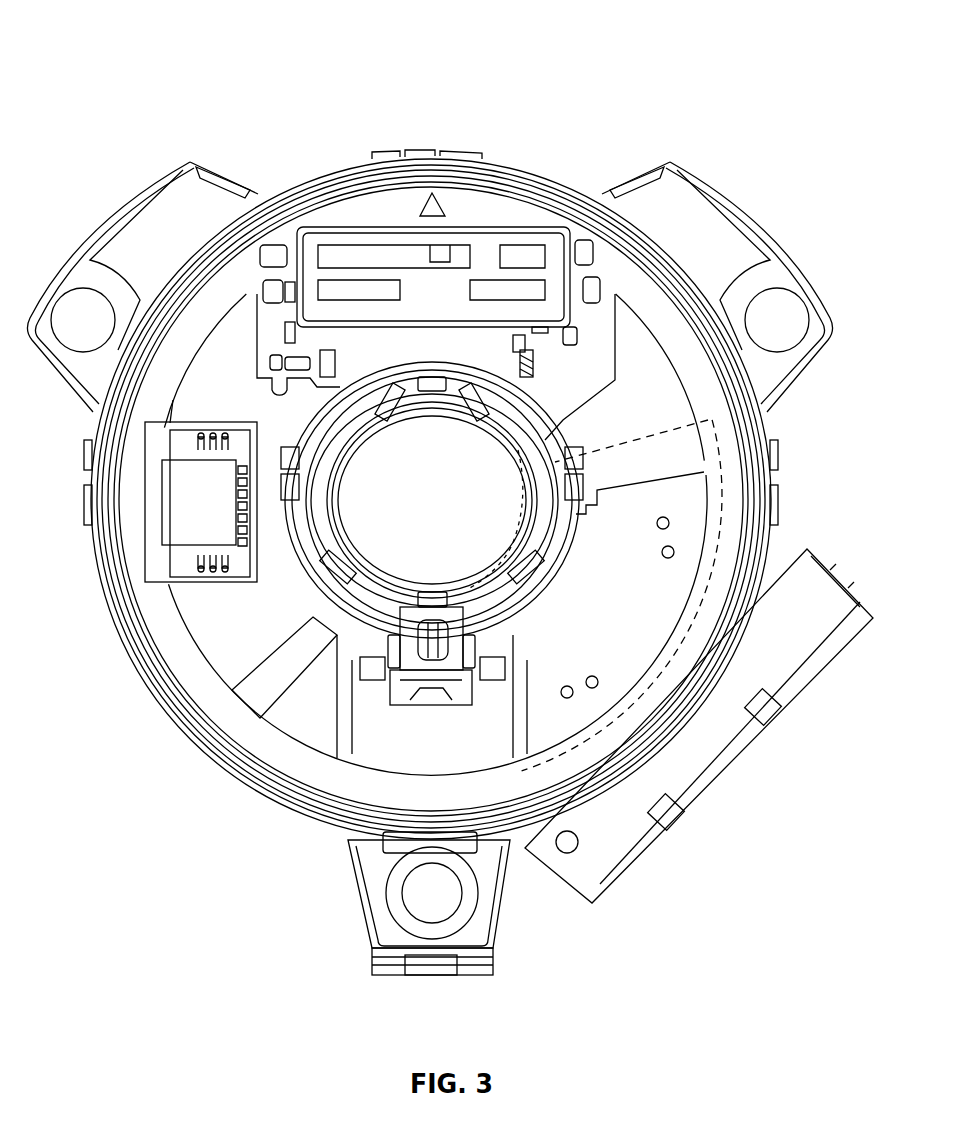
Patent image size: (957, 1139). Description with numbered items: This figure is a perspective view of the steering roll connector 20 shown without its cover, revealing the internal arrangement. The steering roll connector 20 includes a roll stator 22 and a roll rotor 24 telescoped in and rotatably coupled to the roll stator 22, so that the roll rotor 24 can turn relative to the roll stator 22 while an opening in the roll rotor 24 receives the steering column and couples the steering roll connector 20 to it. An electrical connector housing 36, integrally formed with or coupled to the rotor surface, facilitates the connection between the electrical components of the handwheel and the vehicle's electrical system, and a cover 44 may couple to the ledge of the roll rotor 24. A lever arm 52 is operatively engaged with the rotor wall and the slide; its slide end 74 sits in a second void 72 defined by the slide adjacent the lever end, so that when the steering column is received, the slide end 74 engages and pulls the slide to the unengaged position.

The steering roll connector 20 is at (642, 42).
The roll stator 22 is at (683, 248).
The roll rotor 24 is at (701, 410).
The electrical connector housing 36 is at (345, 228).
The cover 44 is at (377, 732).
The lever arm 52 is at (335, 597).
The second void 72 is at (350, 638).
The slide end 74 is at (398, 630).